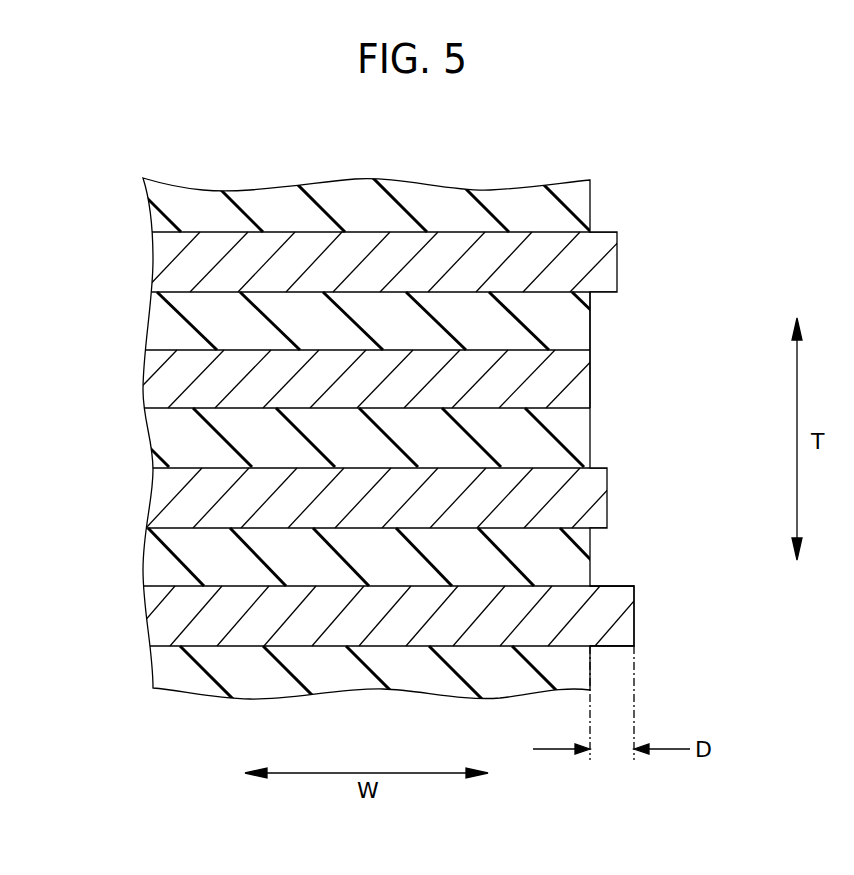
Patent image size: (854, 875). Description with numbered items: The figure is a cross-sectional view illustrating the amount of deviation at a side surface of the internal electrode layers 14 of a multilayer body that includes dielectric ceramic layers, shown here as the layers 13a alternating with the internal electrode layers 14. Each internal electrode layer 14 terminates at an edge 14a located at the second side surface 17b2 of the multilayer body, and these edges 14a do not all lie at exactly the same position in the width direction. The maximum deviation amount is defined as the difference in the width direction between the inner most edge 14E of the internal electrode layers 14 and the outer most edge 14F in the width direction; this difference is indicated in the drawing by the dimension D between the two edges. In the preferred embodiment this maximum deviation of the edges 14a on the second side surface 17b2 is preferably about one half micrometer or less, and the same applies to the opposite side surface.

The internal electrode layer 14 is at (362, 252).
The dielectric layer 13a is at (170, 323).
The edge 14a is at (591, 392).
The inner most edge 14E is at (583, 372).
The outer most edge 14F is at (615, 632).
The second side surface 17b2 is at (591, 322).